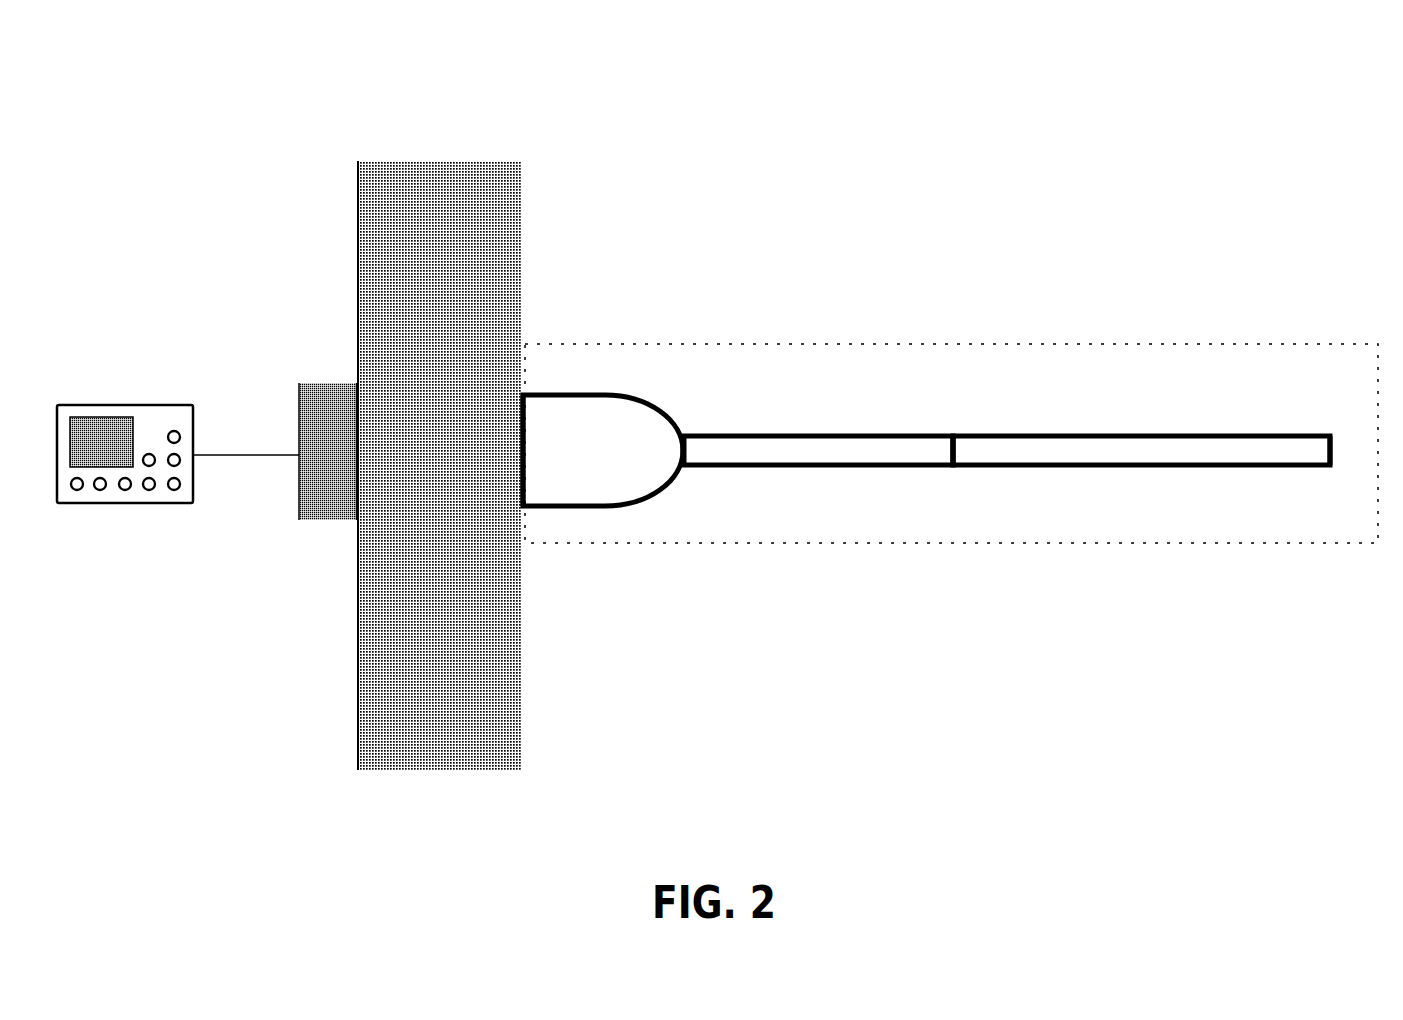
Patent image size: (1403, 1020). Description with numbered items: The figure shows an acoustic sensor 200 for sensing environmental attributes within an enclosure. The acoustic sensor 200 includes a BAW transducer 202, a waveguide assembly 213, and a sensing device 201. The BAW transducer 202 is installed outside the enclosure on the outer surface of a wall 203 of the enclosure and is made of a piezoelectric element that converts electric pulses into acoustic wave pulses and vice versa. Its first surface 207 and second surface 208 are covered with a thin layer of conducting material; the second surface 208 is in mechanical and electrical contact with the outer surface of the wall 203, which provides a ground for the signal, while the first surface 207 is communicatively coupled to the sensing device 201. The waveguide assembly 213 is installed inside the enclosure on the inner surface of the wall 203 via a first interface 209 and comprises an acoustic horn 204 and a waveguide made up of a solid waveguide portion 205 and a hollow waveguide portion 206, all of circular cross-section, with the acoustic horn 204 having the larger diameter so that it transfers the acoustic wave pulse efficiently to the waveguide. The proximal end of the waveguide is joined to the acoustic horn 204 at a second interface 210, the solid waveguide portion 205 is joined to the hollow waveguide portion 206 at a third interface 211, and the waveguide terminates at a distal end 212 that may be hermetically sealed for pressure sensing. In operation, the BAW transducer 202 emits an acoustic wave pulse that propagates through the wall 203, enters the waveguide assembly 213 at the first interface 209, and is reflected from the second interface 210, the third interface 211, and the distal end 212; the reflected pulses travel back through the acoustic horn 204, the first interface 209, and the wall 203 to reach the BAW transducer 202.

The acoustic sensor 200 is at (1158, 66).
The sensing device 201 is at (98, 403).
The BAW transducer 202 is at (324, 381).
The wall 203 is at (524, 254).
The acoustic horn 204 is at (613, 386).
The solid waveguide portion 205 is at (843, 424).
The hollow waveguide portion 206 is at (1176, 426).
The first surface 207 is at (296, 523).
The second surface 208 is at (355, 523).
The first interface 209 is at (528, 516).
The second interface 210 is at (689, 470).
The third interface 211 is at (954, 471).
The distal end 212 is at (1329, 470).
The waveguide assembly 213 is at (1031, 342).